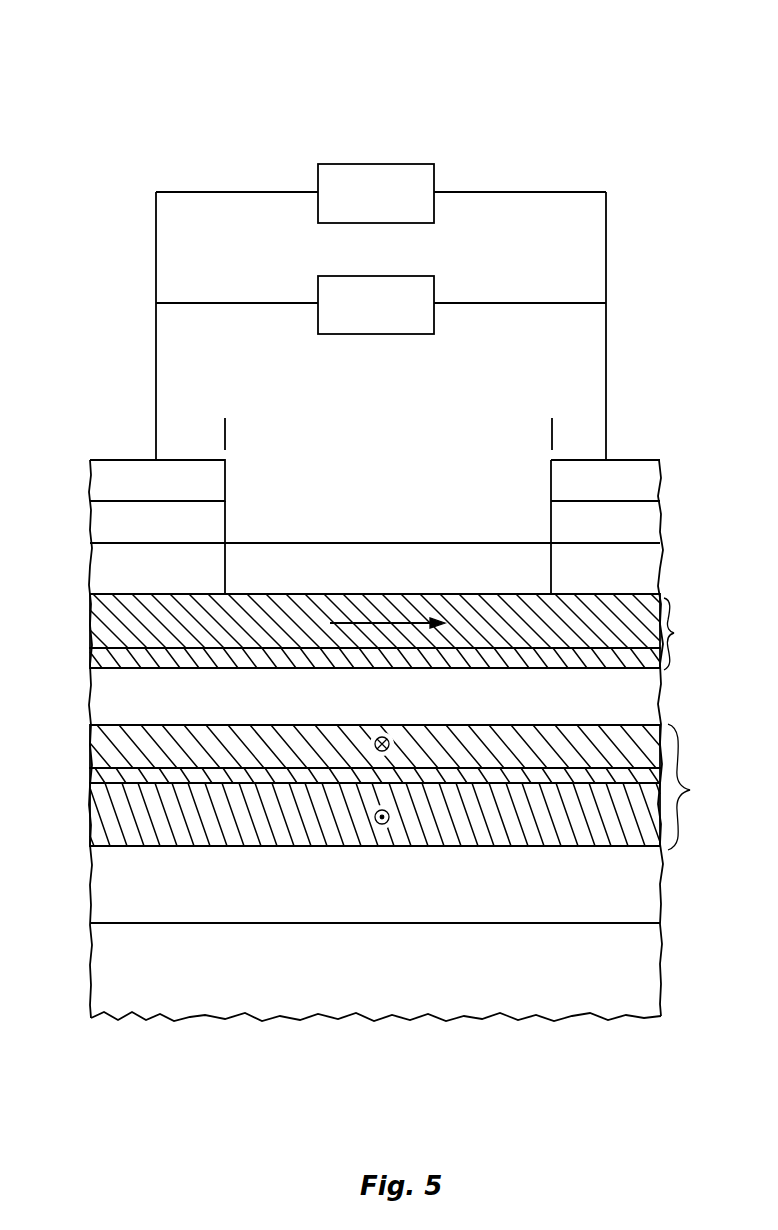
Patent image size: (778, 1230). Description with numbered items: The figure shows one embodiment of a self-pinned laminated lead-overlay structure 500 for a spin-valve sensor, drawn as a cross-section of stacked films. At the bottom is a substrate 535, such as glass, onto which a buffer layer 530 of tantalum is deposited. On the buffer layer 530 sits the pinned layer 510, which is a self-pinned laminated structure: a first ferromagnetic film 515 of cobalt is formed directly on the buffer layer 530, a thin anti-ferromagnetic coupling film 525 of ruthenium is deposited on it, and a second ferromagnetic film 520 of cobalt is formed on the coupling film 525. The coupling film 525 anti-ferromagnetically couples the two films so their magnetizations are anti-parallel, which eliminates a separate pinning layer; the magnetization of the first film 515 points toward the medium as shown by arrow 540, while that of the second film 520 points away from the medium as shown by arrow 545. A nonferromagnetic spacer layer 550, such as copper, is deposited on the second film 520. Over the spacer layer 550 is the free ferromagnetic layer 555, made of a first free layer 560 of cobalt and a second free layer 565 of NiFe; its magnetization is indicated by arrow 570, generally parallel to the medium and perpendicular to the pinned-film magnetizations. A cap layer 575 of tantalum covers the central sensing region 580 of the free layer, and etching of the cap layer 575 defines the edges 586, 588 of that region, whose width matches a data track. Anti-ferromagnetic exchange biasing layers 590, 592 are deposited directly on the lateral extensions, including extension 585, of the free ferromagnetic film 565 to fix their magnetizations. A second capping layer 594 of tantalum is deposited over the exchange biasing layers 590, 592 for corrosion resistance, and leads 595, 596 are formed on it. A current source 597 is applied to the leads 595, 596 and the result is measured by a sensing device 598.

The self-pinned laminated lead-overlay structure 500 is at (610, 122).
The sensing device 598 is at (436, 168).
The current source 597 is at (436, 282).
The edge of central sensing region 586 is at (226, 433).
The edge of central sensing region 588 is at (551, 434).
The lead 595 is at (100, 489).
The lead 596 is at (651, 486).
The second capping layer 594 is at (100, 519).
The cap layer 575 is at (305, 558).
The anti-ferromagnetic exchange biasing layer 590 is at (100, 565).
The lateral extension of free ferromagnetic film 585 is at (121, 594).
The central sensing region 580 is at (527, 595).
The anti-ferromagnetic exchange biasing layer 592 is at (651, 577).
The second free layer 565 is at (100, 631).
The first free layer 560 is at (100, 669).
The arrow indicating free layer magnetization direction 570 is at (368, 625).
The free ferromagnetic layer 555 is at (691, 634).
The nonferromagnetic spacer layer 550 is at (653, 704).
The arrow indicating magnetization direction of second film 545 is at (374, 738).
The second ferromagnetic film 520 is at (100, 754).
The anti-ferromagnetic coupling film 525 is at (100, 787).
The first ferromagnetic film 515 is at (100, 829).
The pinned layer 510 is at (699, 787).
The arrow indicating magnetization direction of first film 540 is at (378, 825).
The buffer layer 530 is at (657, 892).
The substrate 535 is at (657, 976).